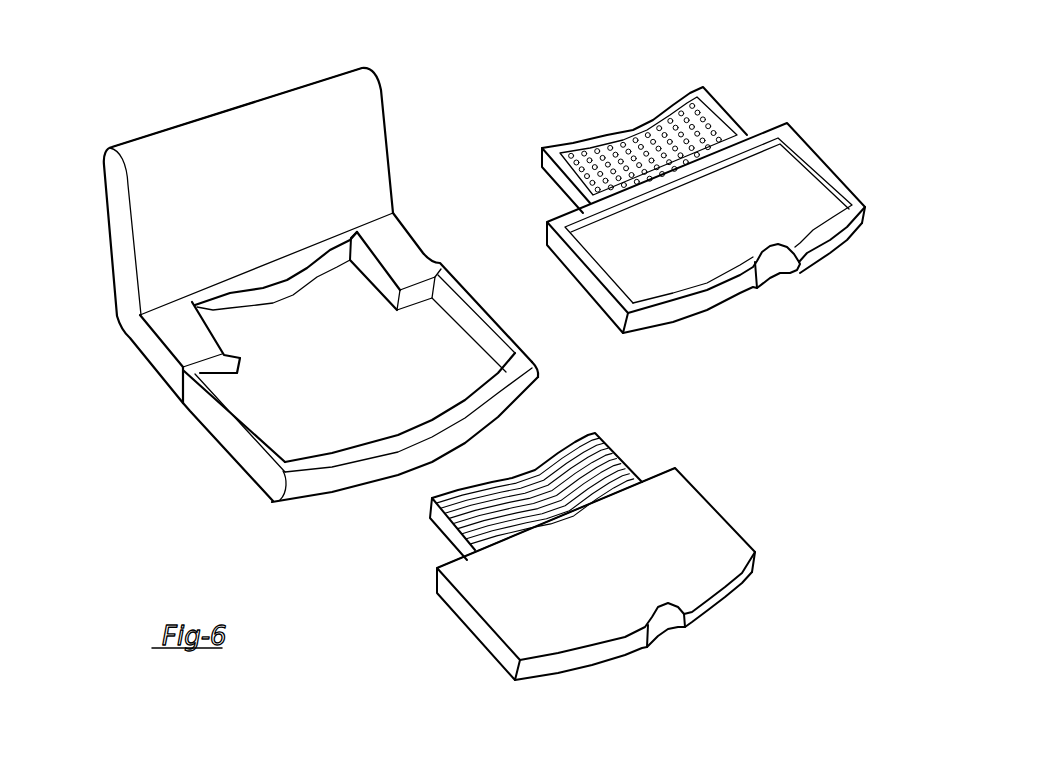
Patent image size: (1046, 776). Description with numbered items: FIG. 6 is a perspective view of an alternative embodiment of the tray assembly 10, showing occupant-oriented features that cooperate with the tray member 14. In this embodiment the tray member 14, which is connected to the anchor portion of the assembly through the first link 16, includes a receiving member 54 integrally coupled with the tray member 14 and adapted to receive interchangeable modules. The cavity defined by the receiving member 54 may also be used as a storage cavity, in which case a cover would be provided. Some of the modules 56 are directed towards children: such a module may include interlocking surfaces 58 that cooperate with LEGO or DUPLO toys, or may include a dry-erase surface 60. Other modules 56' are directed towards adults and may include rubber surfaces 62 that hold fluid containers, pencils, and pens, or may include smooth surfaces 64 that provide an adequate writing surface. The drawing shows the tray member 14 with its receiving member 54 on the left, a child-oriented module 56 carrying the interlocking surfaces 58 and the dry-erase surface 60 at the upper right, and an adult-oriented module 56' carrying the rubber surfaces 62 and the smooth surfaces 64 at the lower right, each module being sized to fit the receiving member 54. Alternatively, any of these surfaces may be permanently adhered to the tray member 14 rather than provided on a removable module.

The tray assembly 10 is at (141, 131).
The tray member 14 is at (188, 410).
The first link 16 is at (103, 203).
The receiving member 54 is at (282, 428).
The module 56 is at (724, 215).
The interlocking surface 58 is at (722, 105).
The dry-erase surface 60 is at (823, 205).
The rubber surface 62 is at (620, 465).
The module 56' is at (629, 561).
The smooth surface 64 is at (728, 550).